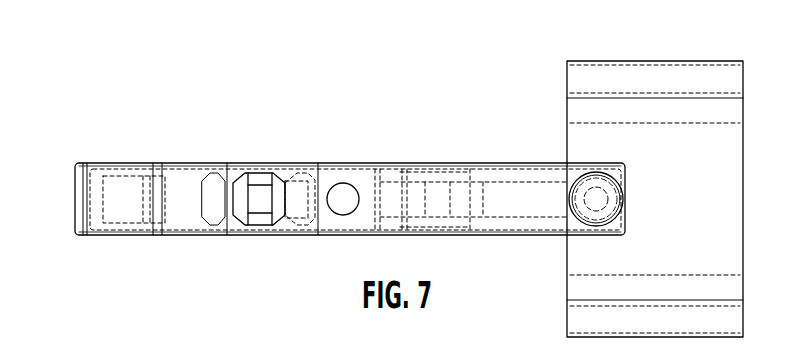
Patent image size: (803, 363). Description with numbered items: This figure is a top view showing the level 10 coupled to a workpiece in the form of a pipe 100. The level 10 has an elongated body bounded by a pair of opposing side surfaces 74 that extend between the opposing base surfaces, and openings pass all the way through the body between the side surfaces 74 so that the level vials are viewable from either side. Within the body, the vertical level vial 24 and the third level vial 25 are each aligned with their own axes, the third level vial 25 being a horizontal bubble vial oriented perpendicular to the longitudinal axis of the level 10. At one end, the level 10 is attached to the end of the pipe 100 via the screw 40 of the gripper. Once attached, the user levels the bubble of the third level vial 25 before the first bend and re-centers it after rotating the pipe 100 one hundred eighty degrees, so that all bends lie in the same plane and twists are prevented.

The level 10 is at (58, 165).
The opposing side surfaces 74 is at (110, 162).
The third level vial 25 is at (262, 193).
The vertical level vial 24 is at (343, 183).
The screw 40 is at (596, 197).
The pipe 100 is at (711, 143).